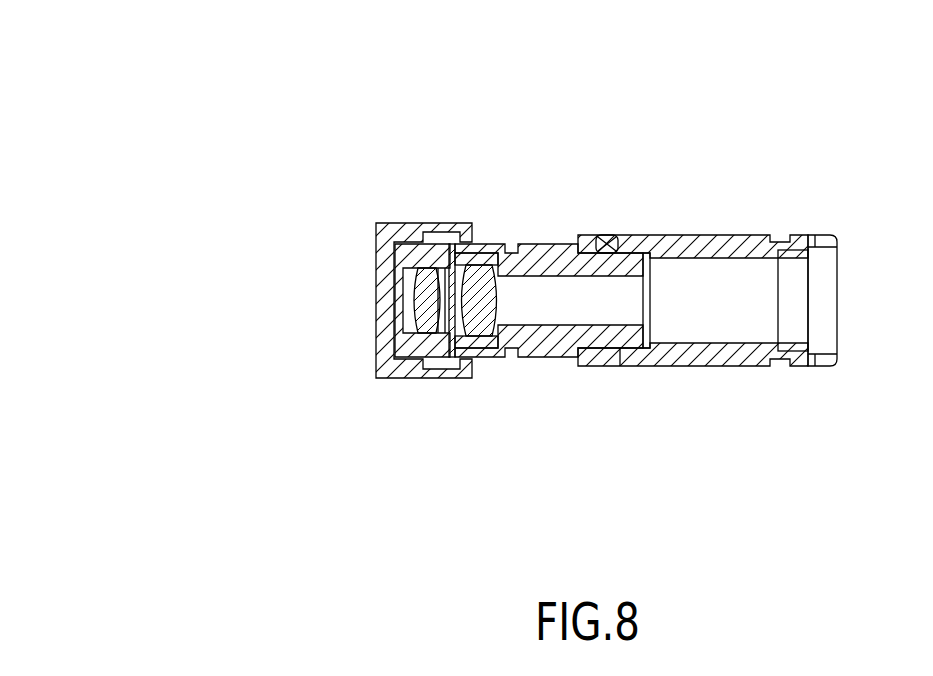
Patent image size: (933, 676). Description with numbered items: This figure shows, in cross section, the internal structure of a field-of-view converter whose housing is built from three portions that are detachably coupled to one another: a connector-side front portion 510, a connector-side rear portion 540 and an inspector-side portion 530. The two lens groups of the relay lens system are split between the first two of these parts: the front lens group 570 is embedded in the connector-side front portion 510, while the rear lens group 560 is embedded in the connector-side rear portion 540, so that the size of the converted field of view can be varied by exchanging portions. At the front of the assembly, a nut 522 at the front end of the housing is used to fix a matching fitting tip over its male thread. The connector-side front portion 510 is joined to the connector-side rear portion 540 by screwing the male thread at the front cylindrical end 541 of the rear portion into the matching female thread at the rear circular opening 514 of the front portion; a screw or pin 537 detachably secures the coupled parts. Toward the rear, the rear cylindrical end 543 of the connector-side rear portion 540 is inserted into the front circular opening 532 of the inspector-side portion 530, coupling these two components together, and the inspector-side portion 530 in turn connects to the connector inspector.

The connector-side front portion 510 is at (442, 345).
The rear circular opening 514 is at (483, 353).
The nut 522 is at (387, 230).
The inspector-side portion 530 is at (746, 288).
The front circular opening 532 is at (703, 433).
The screw or pin 537 is at (612, 236).
The connector-side rear portion 540 is at (538, 245).
The front cylindrical end 541 is at (497, 353).
The rear cylindrical end 543 is at (620, 349).
The rear lens group 560 is at (434, 296).
The front lens group 570 is at (428, 282).